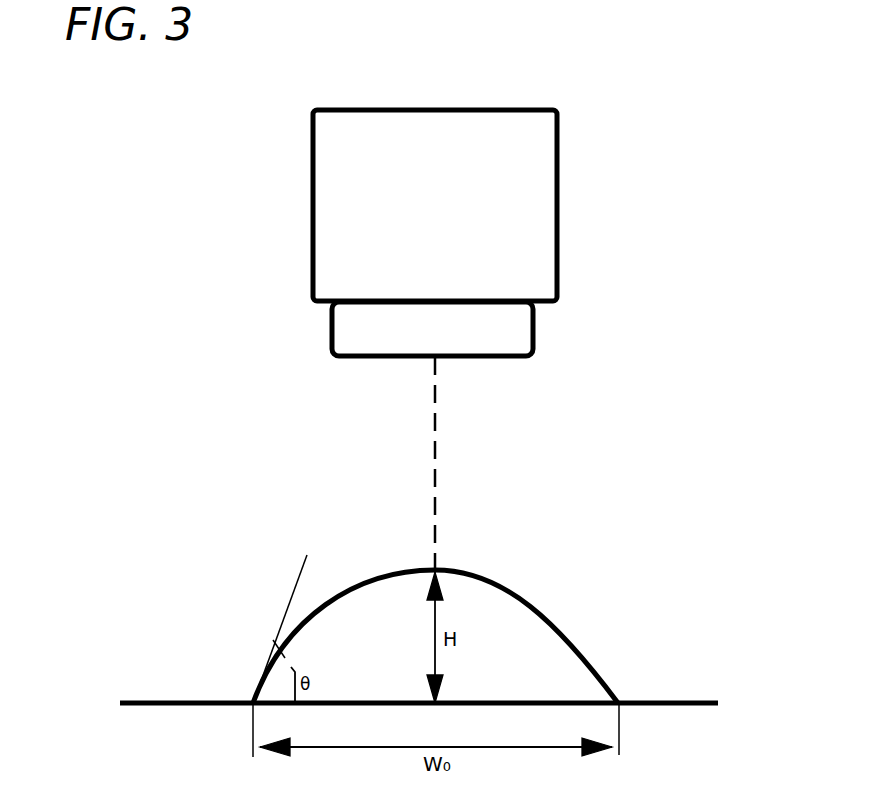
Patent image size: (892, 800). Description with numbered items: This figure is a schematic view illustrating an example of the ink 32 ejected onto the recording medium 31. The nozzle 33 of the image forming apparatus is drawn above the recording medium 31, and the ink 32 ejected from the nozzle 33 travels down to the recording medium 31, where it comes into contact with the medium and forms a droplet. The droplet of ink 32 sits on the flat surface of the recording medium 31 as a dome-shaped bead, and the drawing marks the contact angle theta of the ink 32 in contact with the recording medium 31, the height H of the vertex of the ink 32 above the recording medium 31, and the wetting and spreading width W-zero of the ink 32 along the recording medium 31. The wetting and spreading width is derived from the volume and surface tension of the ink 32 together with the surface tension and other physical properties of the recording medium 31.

The recording medium 31 is at (692, 703).
The ink 32 is at (547, 614).
The nozzle 33 is at (553, 300).